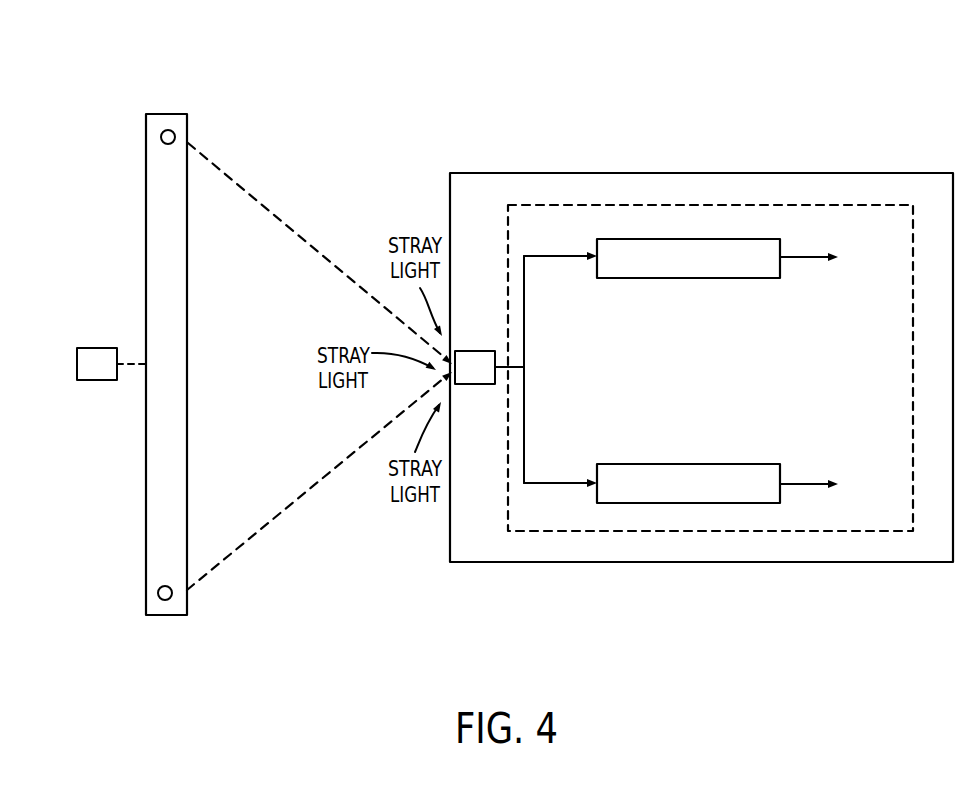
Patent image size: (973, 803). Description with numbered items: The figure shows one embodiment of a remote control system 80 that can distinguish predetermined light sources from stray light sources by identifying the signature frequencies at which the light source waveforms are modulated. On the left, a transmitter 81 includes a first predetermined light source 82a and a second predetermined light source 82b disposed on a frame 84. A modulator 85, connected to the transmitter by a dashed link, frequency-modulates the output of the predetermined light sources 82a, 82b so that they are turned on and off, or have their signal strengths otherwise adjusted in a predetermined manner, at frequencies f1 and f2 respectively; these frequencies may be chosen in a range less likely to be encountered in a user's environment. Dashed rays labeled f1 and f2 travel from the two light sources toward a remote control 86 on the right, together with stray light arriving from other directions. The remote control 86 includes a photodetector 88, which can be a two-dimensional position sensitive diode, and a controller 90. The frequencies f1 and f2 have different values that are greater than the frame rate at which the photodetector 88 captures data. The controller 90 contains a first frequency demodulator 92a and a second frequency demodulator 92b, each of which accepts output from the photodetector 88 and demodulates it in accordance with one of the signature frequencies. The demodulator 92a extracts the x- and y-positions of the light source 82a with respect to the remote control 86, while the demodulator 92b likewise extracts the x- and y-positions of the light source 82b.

The remote control system 80 is at (396, 78).
The transmitter 81 is at (160, 218).
The first predetermined light source 82a is at (160, 136).
The second predetermined light source 82b is at (158, 595).
The frame 84 is at (180, 366).
The modulator 85 is at (104, 377).
The remote control 86 is at (686, 173).
The photodetector 88 is at (469, 385).
The controller 90 is at (683, 532).
The first frequency demodulator 92a is at (690, 279).
The second frequency demodulator 92b is at (690, 464).
The first modulation frequency f1 is at (317, 250).
The second modulation frequency f2 is at (317, 485).